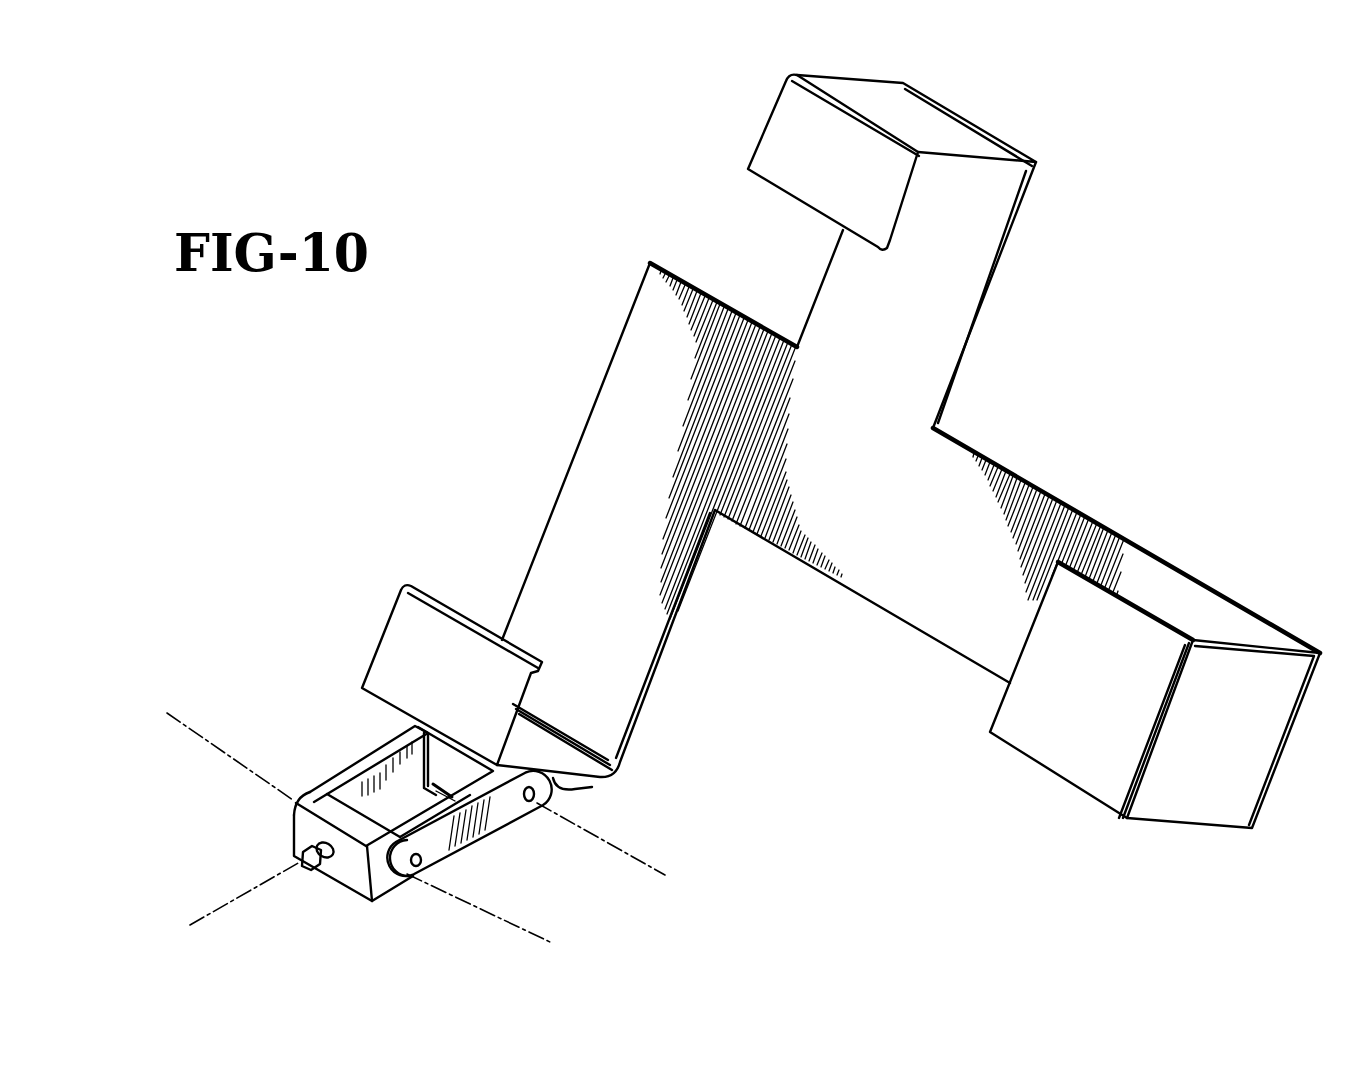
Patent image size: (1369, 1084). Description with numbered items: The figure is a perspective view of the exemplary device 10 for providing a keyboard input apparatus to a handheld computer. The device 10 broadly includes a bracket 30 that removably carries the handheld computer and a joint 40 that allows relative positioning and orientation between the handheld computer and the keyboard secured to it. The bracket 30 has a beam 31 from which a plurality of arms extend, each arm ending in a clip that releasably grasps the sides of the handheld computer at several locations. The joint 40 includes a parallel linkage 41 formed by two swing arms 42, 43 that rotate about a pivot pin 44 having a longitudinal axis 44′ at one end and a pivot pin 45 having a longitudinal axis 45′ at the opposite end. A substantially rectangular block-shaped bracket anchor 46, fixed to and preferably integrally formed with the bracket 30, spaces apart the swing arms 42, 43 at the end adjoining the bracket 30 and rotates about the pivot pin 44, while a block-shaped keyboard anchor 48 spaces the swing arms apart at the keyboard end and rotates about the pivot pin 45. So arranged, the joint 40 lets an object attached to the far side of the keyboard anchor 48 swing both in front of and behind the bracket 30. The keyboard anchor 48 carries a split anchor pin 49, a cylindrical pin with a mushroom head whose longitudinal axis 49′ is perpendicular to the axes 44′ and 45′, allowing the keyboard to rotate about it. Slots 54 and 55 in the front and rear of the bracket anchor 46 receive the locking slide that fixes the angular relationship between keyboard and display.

The device 10 is at (238, 507).
The bracket 30 is at (1200, 565).
The beam 31 is at (1110, 547).
The joint 40 is at (284, 665).
The parallel linkage 41 is at (300, 772).
The swing arm 42 is at (390, 731).
The swing arm 43 is at (465, 847).
The pivot pin 44 is at (528, 801).
The pivot pin 45 is at (407, 872).
The bracket anchor 46 is at (455, 763).
The keyboard anchor 48 is at (352, 872).
The split anchor pin 49 is at (317, 838).
The slot 54 is at (430, 796).
The slot 55 is at (557, 782).
The longitudinal axis 44′ is at (643, 857).
The longitudinal axis 45′ is at (533, 928).
The longitudinal axis 49′ is at (230, 900).